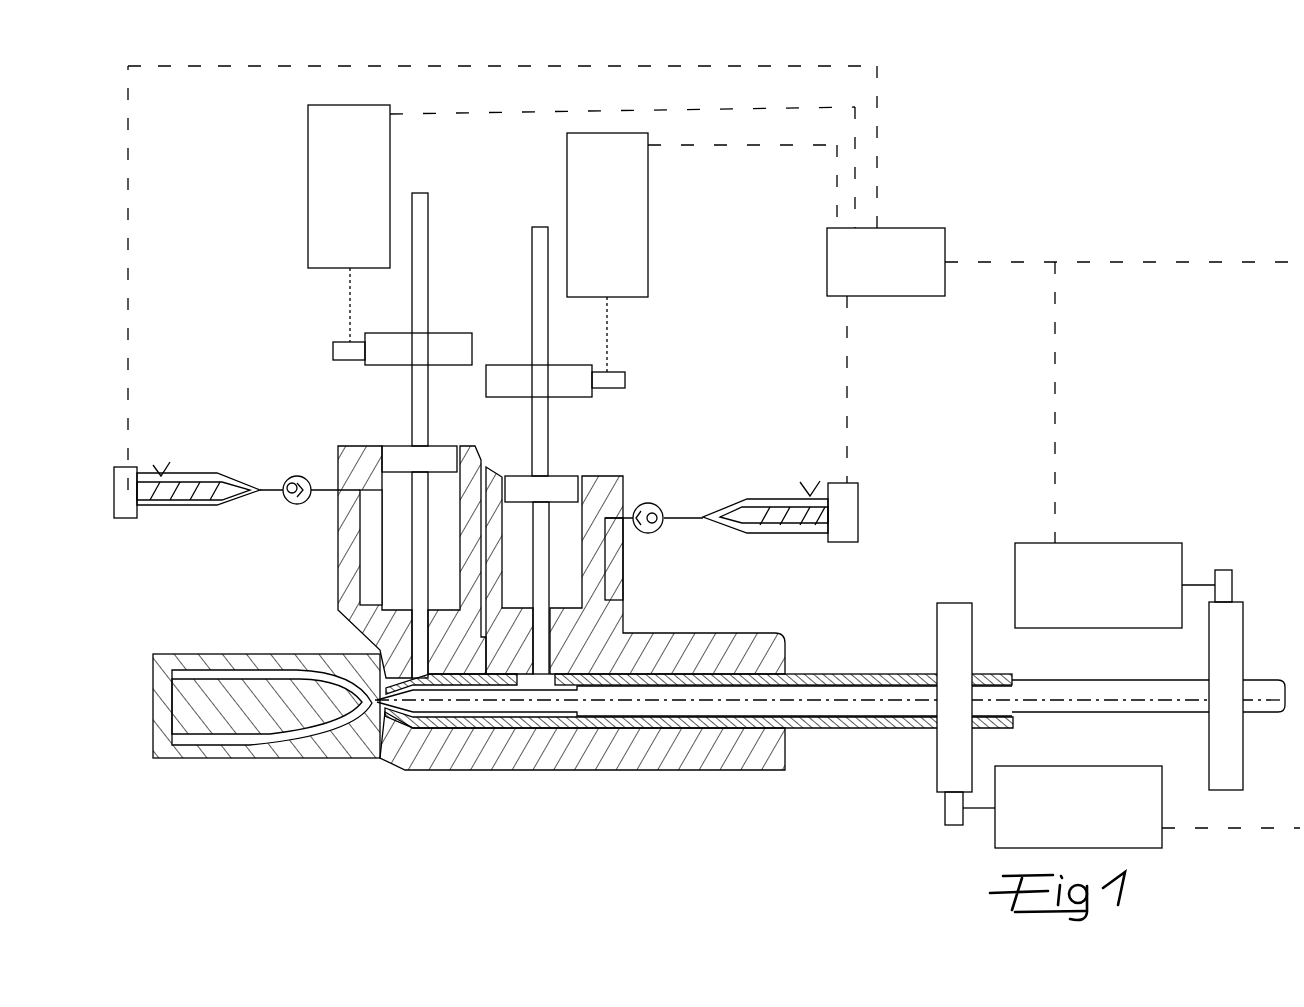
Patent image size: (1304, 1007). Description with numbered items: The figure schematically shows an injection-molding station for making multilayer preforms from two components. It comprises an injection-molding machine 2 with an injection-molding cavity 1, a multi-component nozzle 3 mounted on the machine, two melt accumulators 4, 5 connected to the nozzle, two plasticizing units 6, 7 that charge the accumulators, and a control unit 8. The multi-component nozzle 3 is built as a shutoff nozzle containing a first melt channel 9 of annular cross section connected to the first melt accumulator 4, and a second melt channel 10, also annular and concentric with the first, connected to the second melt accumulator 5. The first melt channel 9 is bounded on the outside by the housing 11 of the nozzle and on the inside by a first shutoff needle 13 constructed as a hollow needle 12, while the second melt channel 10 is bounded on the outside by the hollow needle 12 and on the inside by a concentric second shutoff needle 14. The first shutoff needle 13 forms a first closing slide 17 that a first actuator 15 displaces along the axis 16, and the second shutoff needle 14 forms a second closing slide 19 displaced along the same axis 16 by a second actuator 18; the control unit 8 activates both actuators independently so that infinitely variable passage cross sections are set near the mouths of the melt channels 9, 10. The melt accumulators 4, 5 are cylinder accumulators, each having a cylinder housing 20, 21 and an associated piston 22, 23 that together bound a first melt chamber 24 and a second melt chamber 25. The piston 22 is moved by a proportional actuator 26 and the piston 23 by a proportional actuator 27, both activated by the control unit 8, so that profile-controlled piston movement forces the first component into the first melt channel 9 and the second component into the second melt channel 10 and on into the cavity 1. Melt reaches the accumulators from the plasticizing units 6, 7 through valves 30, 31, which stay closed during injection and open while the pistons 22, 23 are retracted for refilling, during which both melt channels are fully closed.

The injection-molding cavity 1 is at (250, 738).
The injection-molding machine 2 is at (290, 778).
The multi-component nozzle 3 is at (440, 792).
The first melt accumulator 4 is at (315, 430).
The second melt accumulator 5 is at (645, 450).
The first plasticizing unit 6 is at (185, 522).
The second plasticizing unit 7 is at (766, 480).
The control unit 8 is at (946, 228).
The first melt channel 9 is at (400, 738).
The second melt channel 10 is at (480, 730).
The housing 11 is at (535, 764).
The hollow needle 12 is at (695, 732).
The first shutoff needle 13 is at (847, 738).
The second shutoff needle 14 is at (1265, 668).
The first actuator 15 is at (955, 852).
The axis 16 is at (823, 702).
The first closing slide 17 is at (894, 652).
The second actuator 18 is at (1213, 535).
The second closing slide 19 is at (1045, 670).
The cylinder housing 20 is at (340, 578).
The cylinder housing 21 is at (613, 570).
The piston 22 is at (400, 455).
The piston 23 is at (560, 490).
The first melt chamber 24 is at (410, 543).
The second melt chamber 25 is at (550, 545).
The proportional actuator 26 is at (290, 275).
The proportional actuator 27 is at (645, 330).
The valve 30 is at (284, 472).
The valve 31 is at (656, 498).